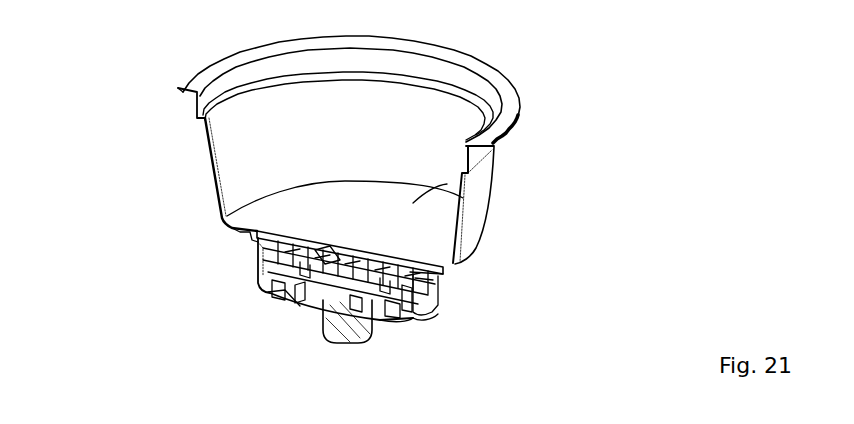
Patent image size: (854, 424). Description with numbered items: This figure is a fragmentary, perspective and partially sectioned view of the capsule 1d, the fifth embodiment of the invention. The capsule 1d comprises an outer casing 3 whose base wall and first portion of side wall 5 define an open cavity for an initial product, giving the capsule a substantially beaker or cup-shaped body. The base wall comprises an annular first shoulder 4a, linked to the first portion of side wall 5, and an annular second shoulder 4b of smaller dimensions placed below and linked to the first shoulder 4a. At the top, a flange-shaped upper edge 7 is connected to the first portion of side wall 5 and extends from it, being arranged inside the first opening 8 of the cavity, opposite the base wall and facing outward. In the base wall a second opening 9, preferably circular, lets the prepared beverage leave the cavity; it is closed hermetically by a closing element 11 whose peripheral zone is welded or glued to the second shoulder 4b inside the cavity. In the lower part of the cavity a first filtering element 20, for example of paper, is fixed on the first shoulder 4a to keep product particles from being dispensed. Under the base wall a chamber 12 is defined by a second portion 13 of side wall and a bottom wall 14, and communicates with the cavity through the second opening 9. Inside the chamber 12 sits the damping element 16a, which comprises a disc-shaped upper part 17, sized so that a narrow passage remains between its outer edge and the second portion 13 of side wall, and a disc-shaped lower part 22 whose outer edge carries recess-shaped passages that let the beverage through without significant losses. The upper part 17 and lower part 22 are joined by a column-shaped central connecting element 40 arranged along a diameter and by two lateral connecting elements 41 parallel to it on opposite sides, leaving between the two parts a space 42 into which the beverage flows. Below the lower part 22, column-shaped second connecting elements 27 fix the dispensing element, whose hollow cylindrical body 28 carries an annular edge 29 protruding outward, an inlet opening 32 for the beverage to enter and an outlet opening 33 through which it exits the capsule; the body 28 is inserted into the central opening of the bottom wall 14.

The capsule 1d is at (543, 143).
The outer casing 3 is at (268, 182).
The annular first shoulder 4a is at (235, 230).
The annular second shoulder 4b is at (258, 272).
The first portion of side wall 5 is at (207, 172).
The flange-shaped upper edge 7 is at (468, 64).
The first opening 8 is at (203, 83).
The second opening 9 is at (268, 242).
The closing element 11 is at (407, 257).
The chamber 12 is at (430, 307).
The second portion of side wall 13 is at (423, 290).
The bottom wall 14 is at (390, 382).
The damping element 16a is at (292, 310).
The upper part 17 is at (413, 277).
The first filtering element 20 is at (463, 198).
The lower part 22 is at (286, 279).
The second connecting elements 27 is at (275, 298).
The hollow cylindrical body 28 is at (305, 318).
The annular edge 29 is at (410, 315).
The inlet opening 32 is at (340, 333).
The outlet opening 33 is at (346, 4).
The central connecting element 40 is at (345, 270).
The lateral connecting elements 41 is at (297, 270).
The space 42 is at (320, 270).